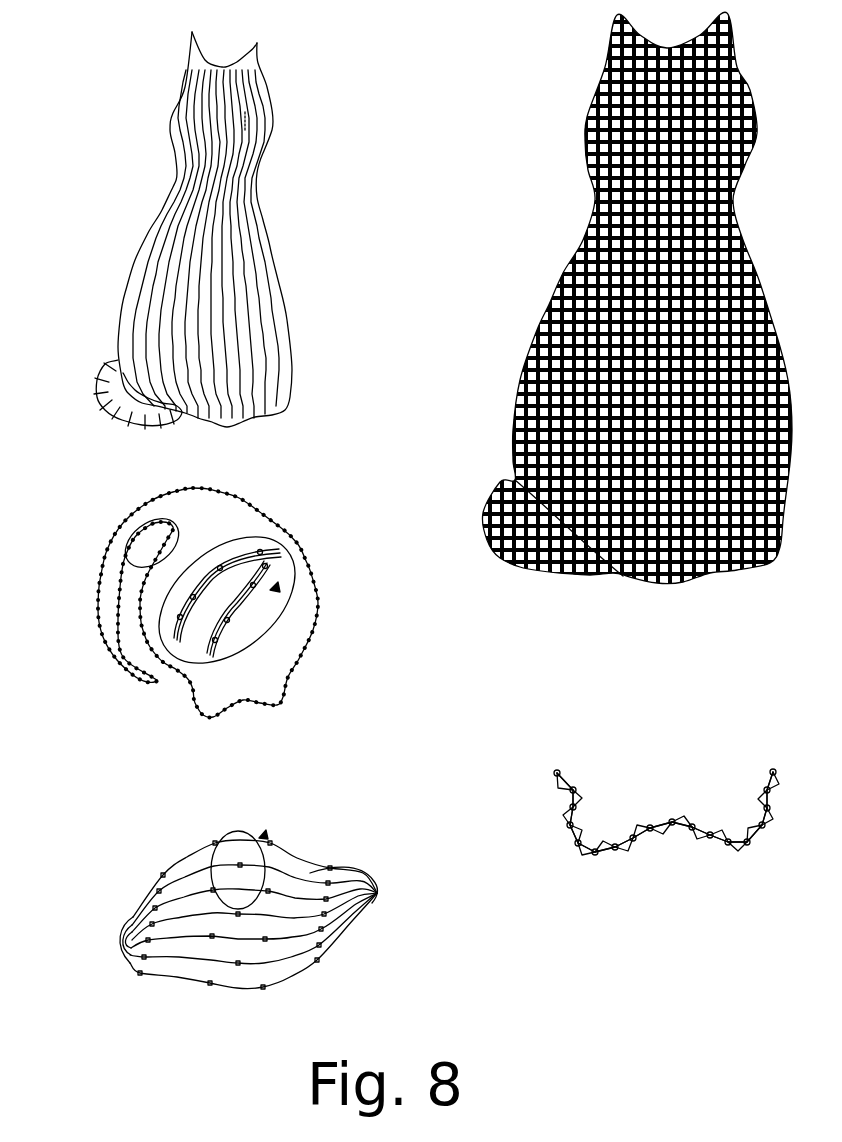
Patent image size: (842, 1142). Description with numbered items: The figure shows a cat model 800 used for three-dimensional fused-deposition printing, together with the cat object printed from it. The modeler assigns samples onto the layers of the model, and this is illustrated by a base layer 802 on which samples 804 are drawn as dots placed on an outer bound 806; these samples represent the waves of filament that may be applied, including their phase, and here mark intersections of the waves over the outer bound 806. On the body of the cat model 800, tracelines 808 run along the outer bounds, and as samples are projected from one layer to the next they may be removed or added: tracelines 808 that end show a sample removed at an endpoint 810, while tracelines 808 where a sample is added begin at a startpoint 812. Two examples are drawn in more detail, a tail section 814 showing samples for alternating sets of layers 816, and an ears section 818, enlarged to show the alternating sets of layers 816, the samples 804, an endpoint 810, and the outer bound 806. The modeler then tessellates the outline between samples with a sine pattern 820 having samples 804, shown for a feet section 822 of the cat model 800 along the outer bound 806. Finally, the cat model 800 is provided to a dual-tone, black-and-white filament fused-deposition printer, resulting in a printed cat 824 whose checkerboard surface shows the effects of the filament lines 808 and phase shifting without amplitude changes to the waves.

The cat model 800 is at (218, 230).
The base layer 802 is at (170, 590).
The samples 804 is at (237, 495).
The outer bound 806 is at (240, 610).
The tracelines 808 is at (245, 82).
The endpoint 810 is at (217, 268).
The startpoint 812 is at (243, 130).
The tail section 814 is at (179, 525).
The alternating sets of layers 816 is at (280, 588).
The ears section 818 is at (162, 804).
The sine pattern 820 is at (562, 773).
The feet section 822 is at (649, 839).
The printed cat 824 is at (555, 88).